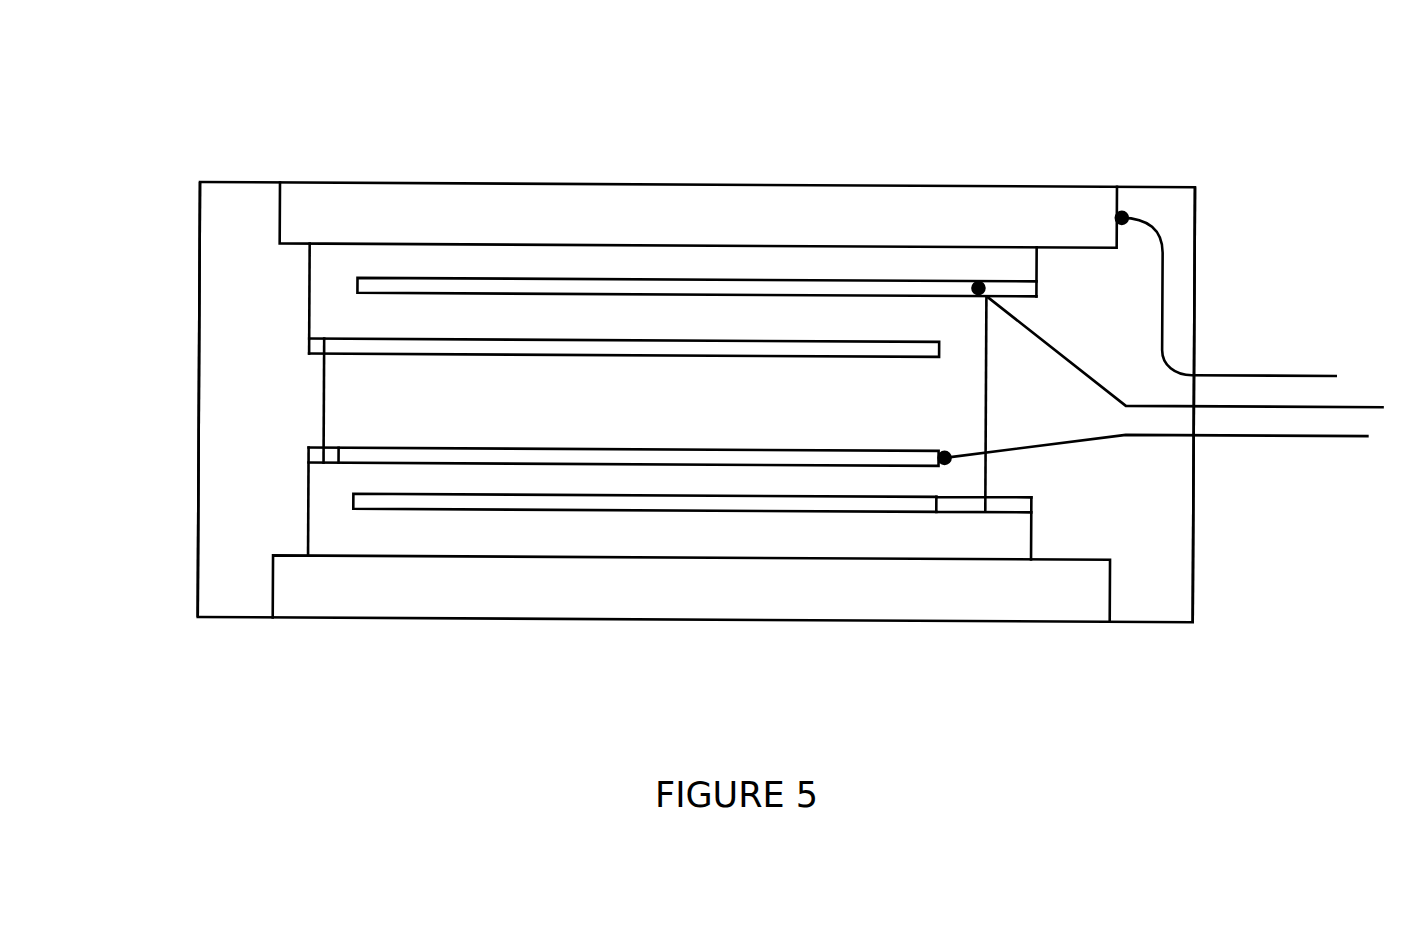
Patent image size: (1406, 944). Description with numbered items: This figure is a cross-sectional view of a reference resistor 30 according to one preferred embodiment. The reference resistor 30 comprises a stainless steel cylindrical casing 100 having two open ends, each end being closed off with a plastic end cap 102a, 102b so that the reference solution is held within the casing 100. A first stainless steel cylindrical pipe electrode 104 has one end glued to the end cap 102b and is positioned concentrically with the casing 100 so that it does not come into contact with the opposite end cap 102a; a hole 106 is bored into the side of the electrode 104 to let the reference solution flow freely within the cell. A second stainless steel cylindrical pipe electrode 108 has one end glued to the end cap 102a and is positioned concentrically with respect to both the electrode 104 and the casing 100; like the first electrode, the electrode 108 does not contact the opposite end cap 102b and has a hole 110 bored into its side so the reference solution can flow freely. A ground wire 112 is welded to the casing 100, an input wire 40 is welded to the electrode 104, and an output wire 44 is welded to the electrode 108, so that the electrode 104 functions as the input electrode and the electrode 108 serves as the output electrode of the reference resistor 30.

The reference resistor 30 is at (1224, 158).
The input wire 40 is at (1368, 406).
The output wire 44 is at (1327, 440).
The stainless steel cylindrical casing 100 is at (843, 208).
The plastic end cap 102a is at (217, 403).
The plastic end cap 102b is at (1162, 580).
The first stainless steel cylindrical pipe electrode 104 is at (687, 283).
The hole 106 is at (962, 508).
The second stainless steel cylindrical pipe electrode 108 is at (418, 348).
The hole 110 is at (332, 457).
The ground wire 112 is at (1268, 374).